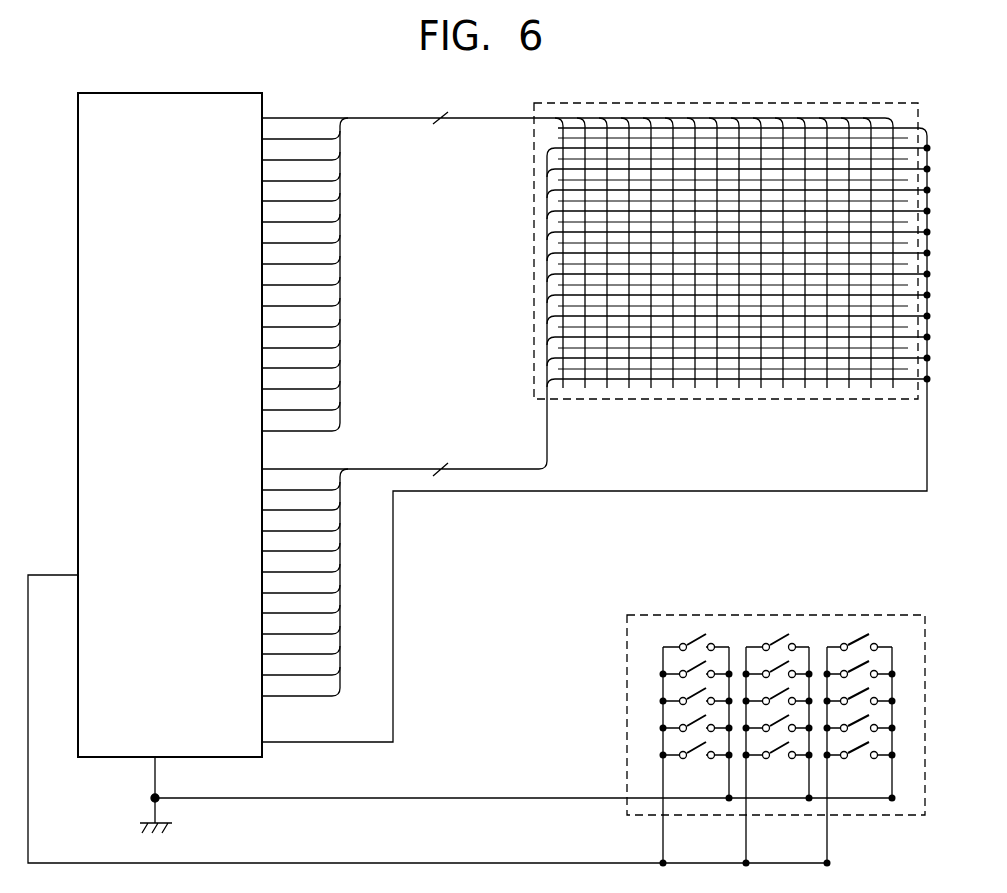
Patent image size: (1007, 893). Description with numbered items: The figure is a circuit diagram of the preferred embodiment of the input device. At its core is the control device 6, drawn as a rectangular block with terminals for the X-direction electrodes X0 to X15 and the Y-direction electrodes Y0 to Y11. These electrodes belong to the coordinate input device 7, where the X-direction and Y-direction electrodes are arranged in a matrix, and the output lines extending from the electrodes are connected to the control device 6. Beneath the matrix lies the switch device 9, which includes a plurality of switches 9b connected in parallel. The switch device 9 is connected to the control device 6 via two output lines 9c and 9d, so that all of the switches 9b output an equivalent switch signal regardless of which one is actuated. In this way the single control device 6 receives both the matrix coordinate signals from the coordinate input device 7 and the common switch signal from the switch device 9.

The control device 6 is at (78, 127).
The coordinate input device 7 is at (920, 105).
The switch device 9 is at (925, 643).
The switches 9b is at (778, 712).
The output line 9c is at (510, 798).
The output line 9d is at (445, 862).